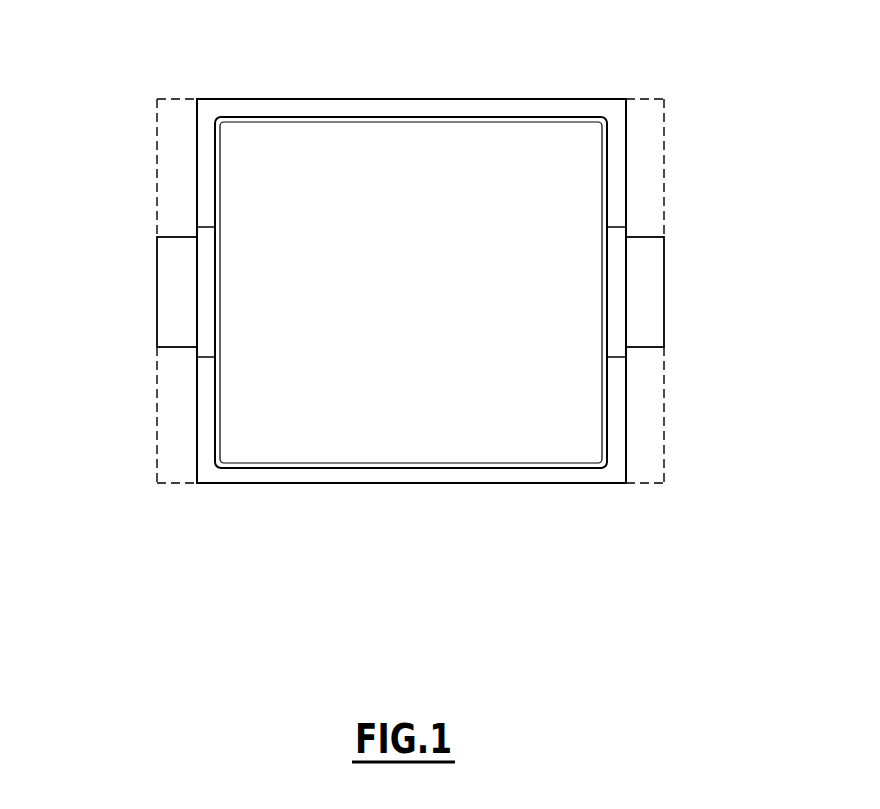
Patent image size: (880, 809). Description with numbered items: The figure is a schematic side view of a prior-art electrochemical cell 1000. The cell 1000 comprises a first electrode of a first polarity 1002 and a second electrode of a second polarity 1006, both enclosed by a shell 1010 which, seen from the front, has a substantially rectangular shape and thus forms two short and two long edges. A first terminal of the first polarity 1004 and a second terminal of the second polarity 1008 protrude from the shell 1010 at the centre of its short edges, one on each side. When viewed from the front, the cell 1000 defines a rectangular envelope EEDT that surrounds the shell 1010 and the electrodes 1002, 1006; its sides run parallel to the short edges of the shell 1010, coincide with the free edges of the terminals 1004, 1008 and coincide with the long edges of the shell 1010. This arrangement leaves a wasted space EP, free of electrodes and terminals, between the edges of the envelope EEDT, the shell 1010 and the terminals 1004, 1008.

The electrochemical cell 1000 is at (370, 200).
The first electrode of a first polarity 1002 is at (298, 400).
The first terminal of the first polarity 1004 is at (180, 303).
The second electrode of a second polarity 1006 is at (468, 355).
The second terminal of the second polarity 1008 is at (643, 306).
The shell 1010 is at (511, 115).
The envelope EEDT is at (158, 148).
The wasted space EP is at (648, 163).